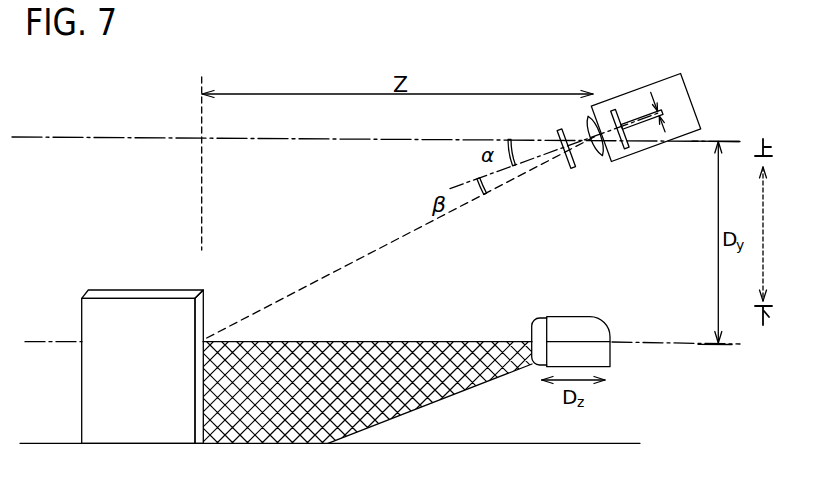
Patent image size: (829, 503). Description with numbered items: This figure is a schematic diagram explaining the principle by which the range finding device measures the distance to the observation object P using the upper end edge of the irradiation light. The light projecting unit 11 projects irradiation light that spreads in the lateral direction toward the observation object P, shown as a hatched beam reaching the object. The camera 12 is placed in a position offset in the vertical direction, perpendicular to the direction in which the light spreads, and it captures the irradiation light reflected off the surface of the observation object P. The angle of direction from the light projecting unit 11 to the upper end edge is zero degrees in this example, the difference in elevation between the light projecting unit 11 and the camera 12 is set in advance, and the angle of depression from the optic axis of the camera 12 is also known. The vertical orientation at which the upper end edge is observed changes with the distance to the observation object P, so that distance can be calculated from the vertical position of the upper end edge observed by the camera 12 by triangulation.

The light projecting unit 11 is at (571, 317).
The camera 12 is at (663, 83).
The observation object P is at (148, 291).